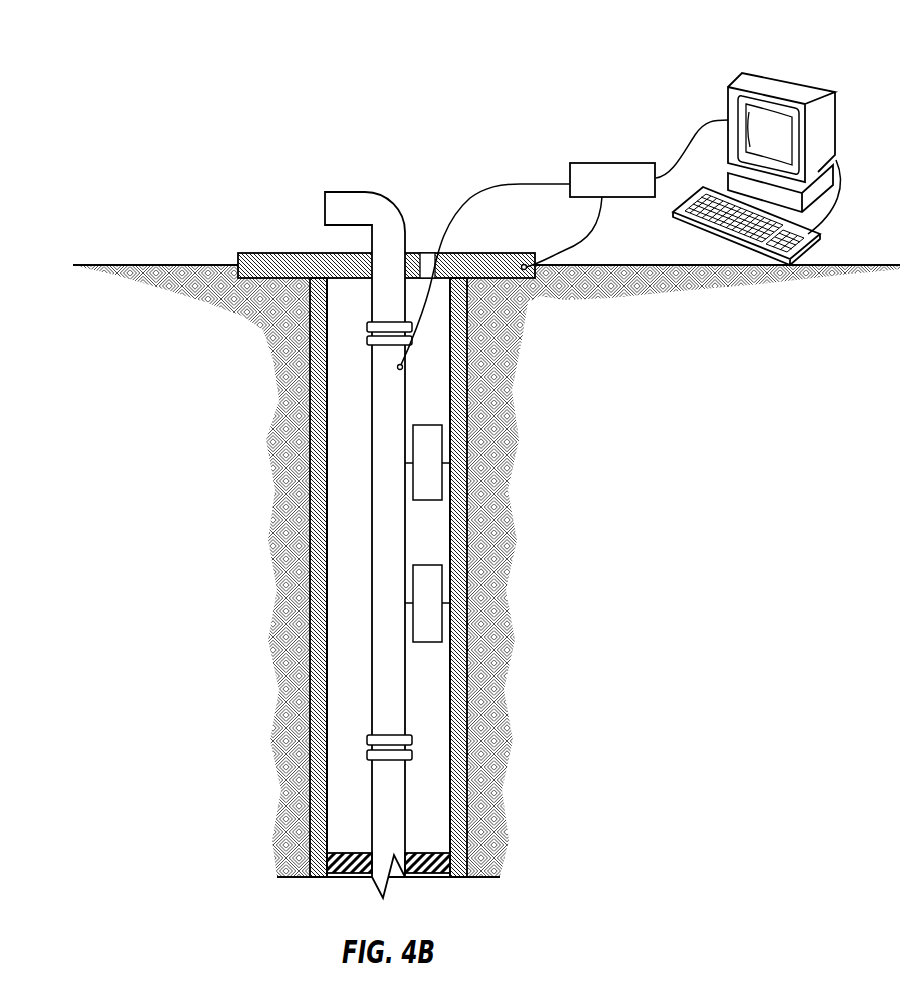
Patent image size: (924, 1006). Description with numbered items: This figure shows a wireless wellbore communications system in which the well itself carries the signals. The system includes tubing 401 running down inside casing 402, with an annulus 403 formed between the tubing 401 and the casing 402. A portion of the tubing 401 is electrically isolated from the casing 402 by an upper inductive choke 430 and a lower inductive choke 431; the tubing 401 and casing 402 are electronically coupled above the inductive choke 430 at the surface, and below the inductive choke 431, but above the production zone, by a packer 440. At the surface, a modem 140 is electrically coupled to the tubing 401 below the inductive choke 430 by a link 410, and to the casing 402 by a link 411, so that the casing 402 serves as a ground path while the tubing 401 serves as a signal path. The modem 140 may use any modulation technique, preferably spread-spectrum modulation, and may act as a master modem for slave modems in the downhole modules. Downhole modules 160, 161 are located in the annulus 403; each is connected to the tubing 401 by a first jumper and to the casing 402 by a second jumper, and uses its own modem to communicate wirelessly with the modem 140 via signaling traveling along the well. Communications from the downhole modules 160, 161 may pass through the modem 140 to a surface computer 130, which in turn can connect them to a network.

The surface computer 130 is at (788, 73).
The modem 140 is at (613, 163).
The downhole module 160 is at (440, 425).
The downhole module 161 is at (440, 565).
The tubing 401 is at (365, 192).
The casing 402 is at (309, 397).
The annulus 403 is at (338, 502).
The link 410 is at (498, 185).
The link 411 is at (598, 218).
The inductive choke 430 is at (367, 341).
The inductive choke 431 is at (367, 756).
The packer 440 is at (427, 853).